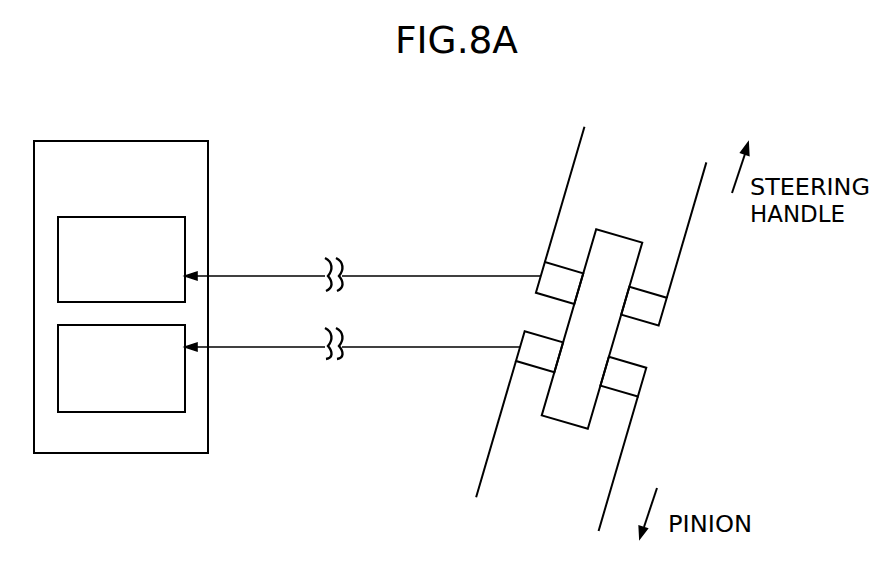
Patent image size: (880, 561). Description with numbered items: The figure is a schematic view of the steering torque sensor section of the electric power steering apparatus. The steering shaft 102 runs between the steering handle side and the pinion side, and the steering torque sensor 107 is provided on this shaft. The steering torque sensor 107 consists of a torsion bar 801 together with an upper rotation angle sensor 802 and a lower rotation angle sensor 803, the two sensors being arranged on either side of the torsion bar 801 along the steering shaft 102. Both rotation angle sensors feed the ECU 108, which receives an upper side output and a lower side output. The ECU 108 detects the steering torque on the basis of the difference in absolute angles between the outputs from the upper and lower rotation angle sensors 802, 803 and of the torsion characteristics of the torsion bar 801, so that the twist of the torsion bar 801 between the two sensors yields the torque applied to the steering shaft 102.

The ECU 108 is at (208, 162).
The steering shaft 102 is at (527, 170).
The steering torque sensor 107 is at (662, 329).
The torsion bar 801 is at (615, 343).
The upper rotation angle sensor 802 is at (663, 313).
The lower rotation angle sensor 803 is at (645, 377).